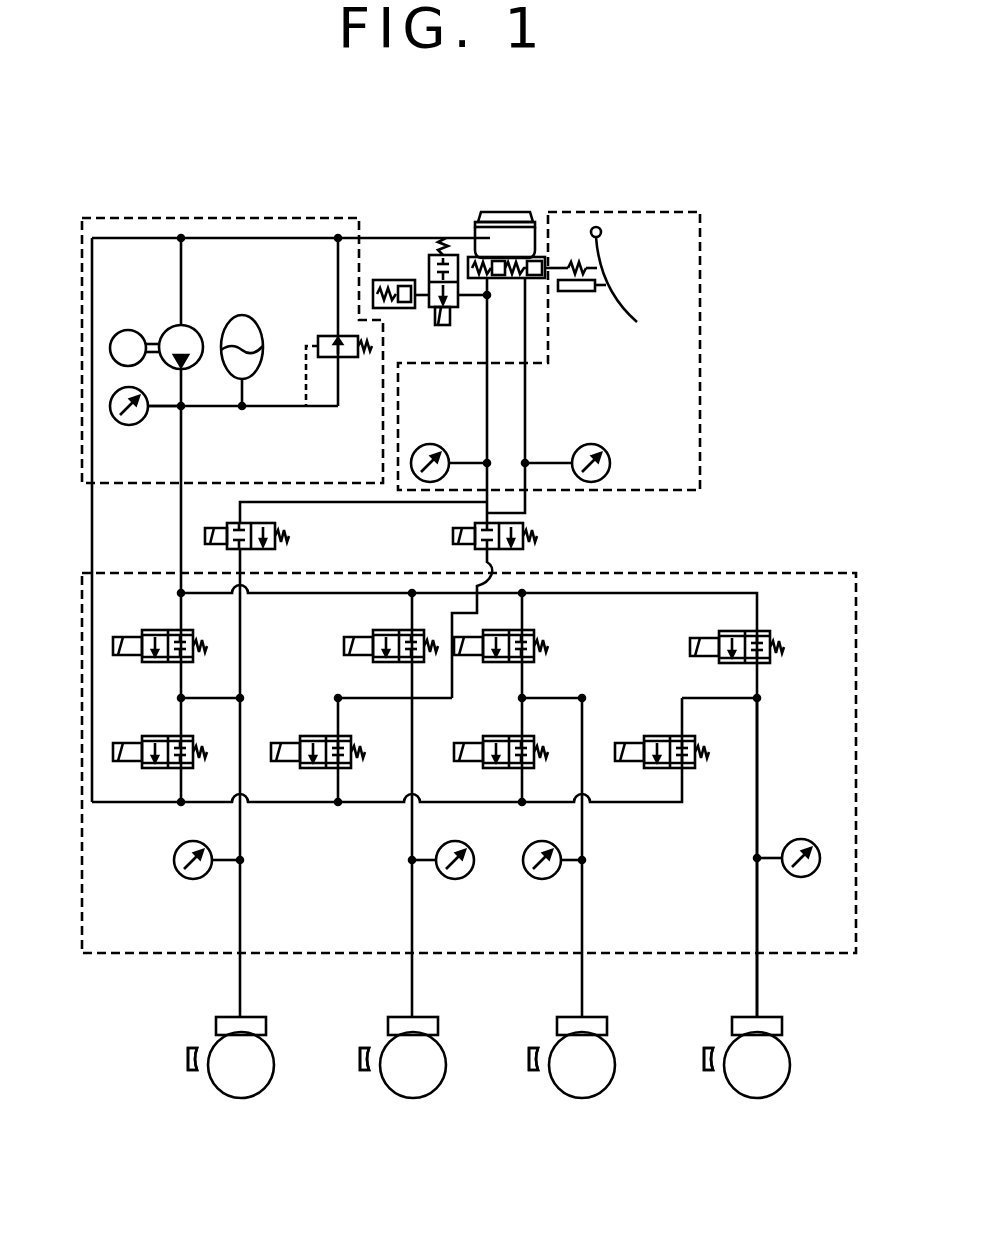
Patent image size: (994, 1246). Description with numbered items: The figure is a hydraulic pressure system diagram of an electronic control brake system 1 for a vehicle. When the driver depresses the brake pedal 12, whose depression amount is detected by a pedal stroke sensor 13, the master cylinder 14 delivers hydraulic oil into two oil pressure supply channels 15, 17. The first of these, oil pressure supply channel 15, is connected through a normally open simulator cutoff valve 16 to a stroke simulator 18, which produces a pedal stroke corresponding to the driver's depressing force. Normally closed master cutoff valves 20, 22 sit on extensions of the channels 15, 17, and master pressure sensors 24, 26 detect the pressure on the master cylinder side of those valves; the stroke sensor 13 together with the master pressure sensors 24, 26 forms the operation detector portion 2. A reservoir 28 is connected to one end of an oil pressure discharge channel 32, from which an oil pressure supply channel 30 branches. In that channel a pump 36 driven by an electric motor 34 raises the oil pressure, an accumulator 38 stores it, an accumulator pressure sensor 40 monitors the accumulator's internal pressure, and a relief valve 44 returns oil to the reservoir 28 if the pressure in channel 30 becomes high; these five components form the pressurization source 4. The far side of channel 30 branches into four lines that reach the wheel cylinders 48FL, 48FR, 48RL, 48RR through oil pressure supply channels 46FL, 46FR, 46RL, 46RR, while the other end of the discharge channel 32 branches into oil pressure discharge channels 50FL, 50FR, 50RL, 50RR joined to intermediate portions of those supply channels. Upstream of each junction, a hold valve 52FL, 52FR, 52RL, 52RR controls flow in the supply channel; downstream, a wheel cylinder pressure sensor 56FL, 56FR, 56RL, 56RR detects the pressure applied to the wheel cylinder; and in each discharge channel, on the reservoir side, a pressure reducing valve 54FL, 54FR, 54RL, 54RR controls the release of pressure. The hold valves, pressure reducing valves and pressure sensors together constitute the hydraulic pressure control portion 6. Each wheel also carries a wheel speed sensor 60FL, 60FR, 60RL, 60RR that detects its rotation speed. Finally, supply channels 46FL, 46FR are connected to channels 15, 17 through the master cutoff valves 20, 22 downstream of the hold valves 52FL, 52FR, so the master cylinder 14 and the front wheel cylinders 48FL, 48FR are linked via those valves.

The electronic control brake system 1 is at (744, 291).
The operation detector portion 2 is at (700, 418).
The pressurization source 4 is at (150, 218).
The hydraulic pressure control portion 6 is at (760, 573).
The brake pedal 12 is at (636, 313).
The pedal stroke sensor 13 is at (592, 292).
The master cylinder 14 is at (545, 257).
The oil pressure supply channel 15 is at (487, 337).
The simulator cutoff valve 16 is at (433, 256).
The oil pressure supply channel 17 is at (527, 340).
The stroke simulator 18 is at (395, 280).
The master cutoff valve 20 is at (278, 545).
The master cutoff valve 22 is at (475, 548).
The master pressure sensor 24 is at (437, 444).
The master pressure sensor 26 is at (594, 444).
The reservoir 28 is at (470, 214).
The oil pressure supply channel 30 is at (181, 450).
The oil pressure discharge channel 32 is at (92, 517).
The electric motor 34 is at (120, 331).
The pump 36 is at (167, 330).
The accumulator 38 is at (240, 315).
The accumulator pressure sensor 40 is at (136, 428).
The relief valve 44 is at (322, 336).
The oil pressure supply channel 46FL is at (243, 735).
The oil pressure supply channel 46FR is at (413, 752).
The oil pressure supply channel 46RL is at (590, 716).
The oil pressure supply channel 46RR is at (757, 718).
The wheel cylinder 48FL is at (267, 1022).
The wheel cylinder 48FR is at (439, 1022).
The wheel cylinder 48RL is at (608, 1022).
The wheel cylinder 48RR is at (783, 1022).
The oil pressure discharge channel 50FL is at (178, 722).
The oil pressure discharge channel 50FR is at (373, 697).
The oil pressure discharge channel 50RL is at (558, 698).
The oil pressure discharge channel 50RR is at (715, 700).
The hold valve 52FL is at (153, 629).
The hold valve 52FR is at (366, 627).
The hold valve 52RL is at (530, 628).
The hold valve 52RR is at (773, 628).
The pressure reducing valve 54FL is at (148, 772).
The pressure reducing valve 54FR is at (308, 772).
The pressure reducing valve 54RL is at (492, 773).
The pressure reducing valve 54RR is at (705, 770).
The wheel cylinder pressure sensor 56FL is at (193, 880).
The wheel cylinder pressure sensor 56FR is at (455, 880).
The wheel cylinder pressure sensor 56RL is at (542, 880).
The wheel cylinder pressure sensor 56RR is at (801, 878).
The wheel speed sensor 60FL is at (191, 1072).
The wheel speed sensor 60FR is at (363, 1072).
The wheel speed sensor 60RL is at (532, 1072).
The wheel speed sensor 60RR is at (707, 1072).